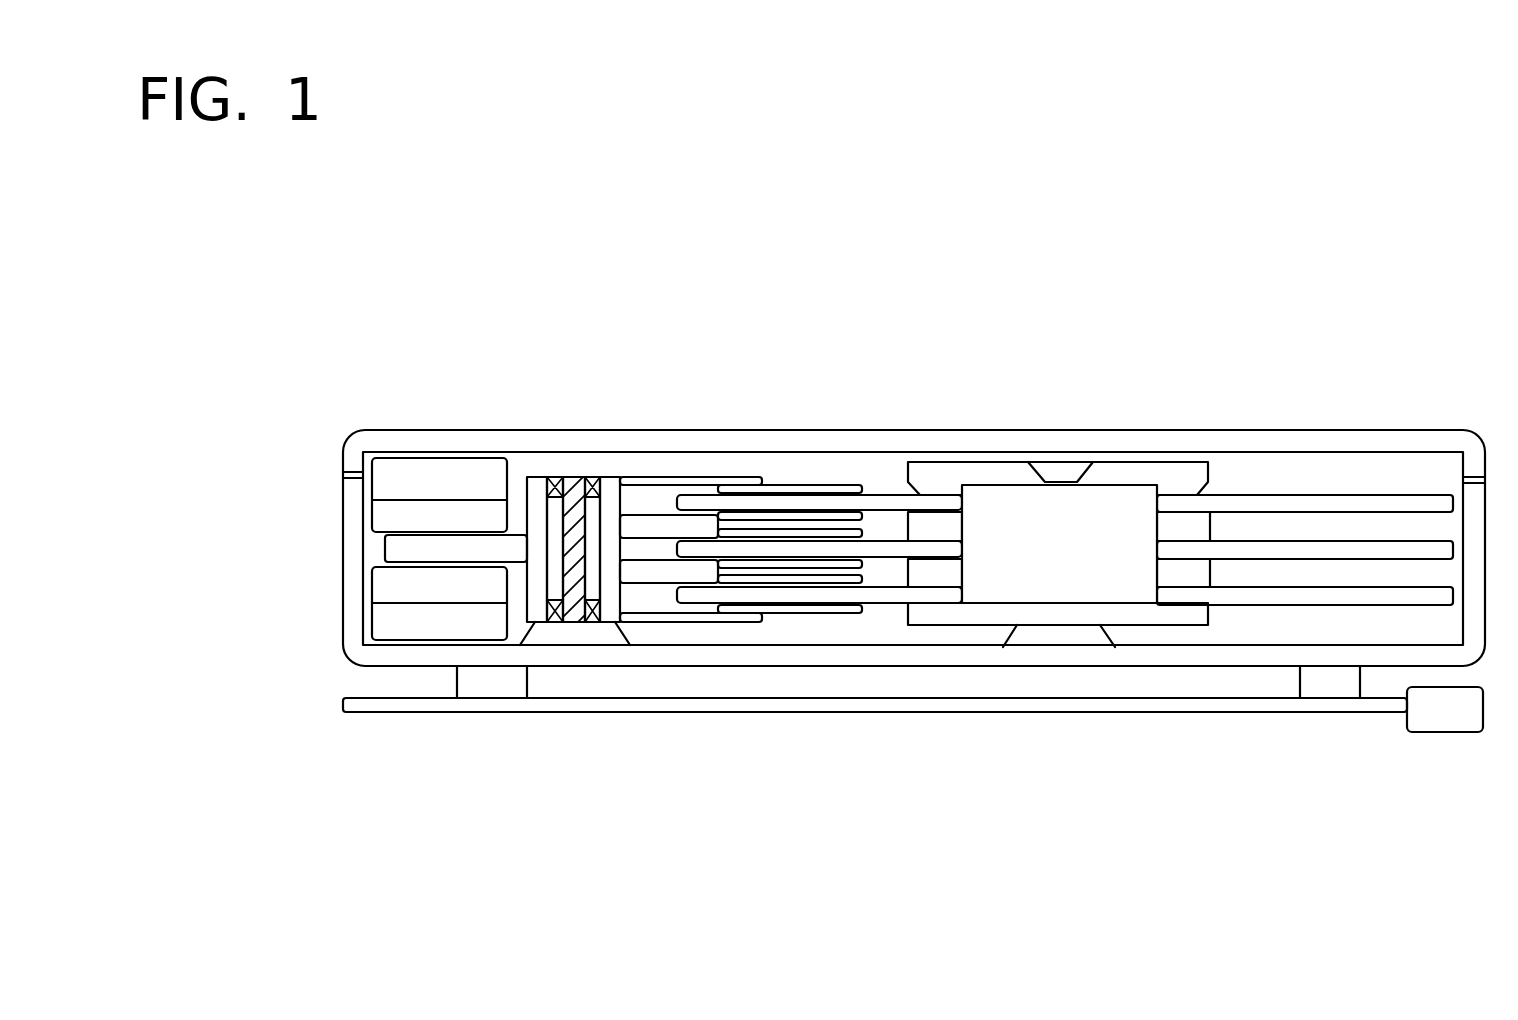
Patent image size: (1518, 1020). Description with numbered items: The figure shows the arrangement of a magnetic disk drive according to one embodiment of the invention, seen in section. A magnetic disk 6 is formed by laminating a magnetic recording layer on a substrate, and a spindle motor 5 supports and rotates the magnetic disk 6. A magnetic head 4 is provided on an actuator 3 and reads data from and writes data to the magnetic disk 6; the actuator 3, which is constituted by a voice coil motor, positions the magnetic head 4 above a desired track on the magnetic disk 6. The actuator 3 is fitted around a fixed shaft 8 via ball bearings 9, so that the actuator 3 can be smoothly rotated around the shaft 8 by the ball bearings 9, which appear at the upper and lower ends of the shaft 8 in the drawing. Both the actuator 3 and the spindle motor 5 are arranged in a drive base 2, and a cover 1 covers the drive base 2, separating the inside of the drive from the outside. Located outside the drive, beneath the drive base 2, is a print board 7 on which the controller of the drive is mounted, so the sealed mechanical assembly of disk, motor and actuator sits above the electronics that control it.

The cover 1 is at (418, 435).
The drive base 2 is at (673, 667).
The actuator 3 is at (576, 480).
The magnetic head 4 is at (847, 483).
The spindle motor 5 is at (1137, 500).
The magnetic disk 6 is at (1342, 500).
The print board 7 is at (943, 713).
The fixed shaft 8 is at (577, 627).
The ball bearings 9 is at (600, 483).